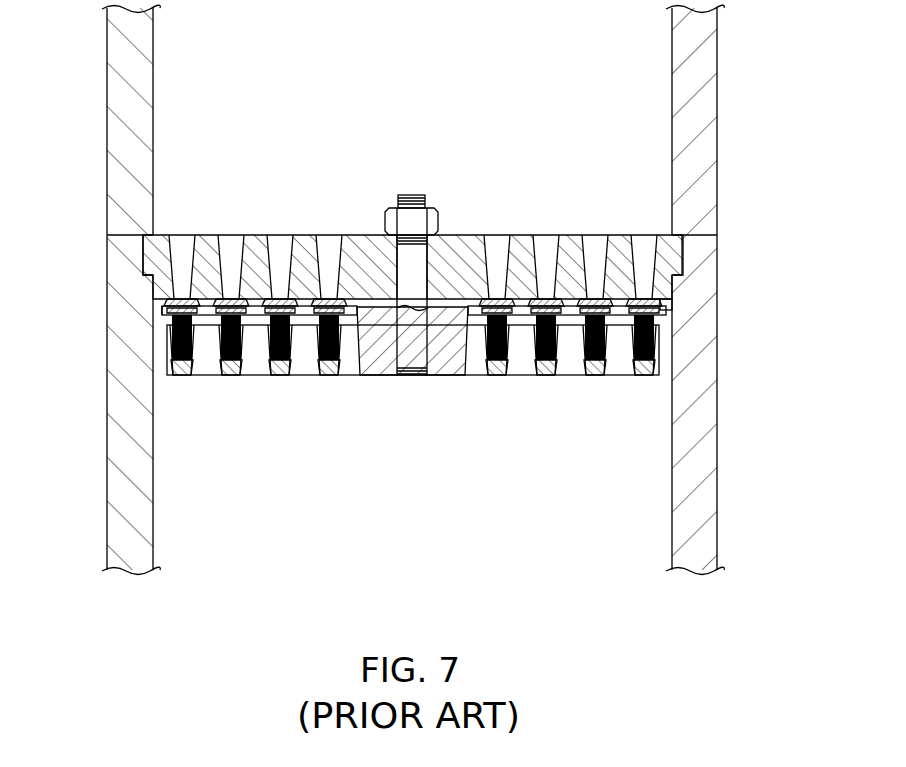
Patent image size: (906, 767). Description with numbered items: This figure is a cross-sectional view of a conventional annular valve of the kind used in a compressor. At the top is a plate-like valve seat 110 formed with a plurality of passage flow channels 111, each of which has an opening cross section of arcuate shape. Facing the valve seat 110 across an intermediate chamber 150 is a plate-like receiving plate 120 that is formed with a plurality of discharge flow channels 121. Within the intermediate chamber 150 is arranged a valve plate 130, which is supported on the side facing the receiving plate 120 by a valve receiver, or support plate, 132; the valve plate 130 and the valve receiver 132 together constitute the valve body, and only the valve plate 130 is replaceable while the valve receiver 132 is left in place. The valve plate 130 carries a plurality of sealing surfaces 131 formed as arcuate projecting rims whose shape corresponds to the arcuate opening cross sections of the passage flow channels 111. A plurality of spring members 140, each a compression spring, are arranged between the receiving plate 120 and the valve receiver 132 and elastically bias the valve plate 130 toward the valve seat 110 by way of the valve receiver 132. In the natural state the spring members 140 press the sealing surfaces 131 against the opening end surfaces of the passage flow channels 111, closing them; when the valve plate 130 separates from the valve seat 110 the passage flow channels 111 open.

The valve seat 110 is at (290, 176).
The passage flow channel 111 is at (229, 258).
The receiving plate 120 is at (321, 384).
The discharge flow channel 121 is at (205, 353).
The valve plate 130 is at (670, 299).
The sealing surface 131 is at (684, 266).
The valve receiver (support plate) 132 is at (660, 312).
The spring member 140 is at (228, 362).
The intermediate chamber 150 is at (162, 309).